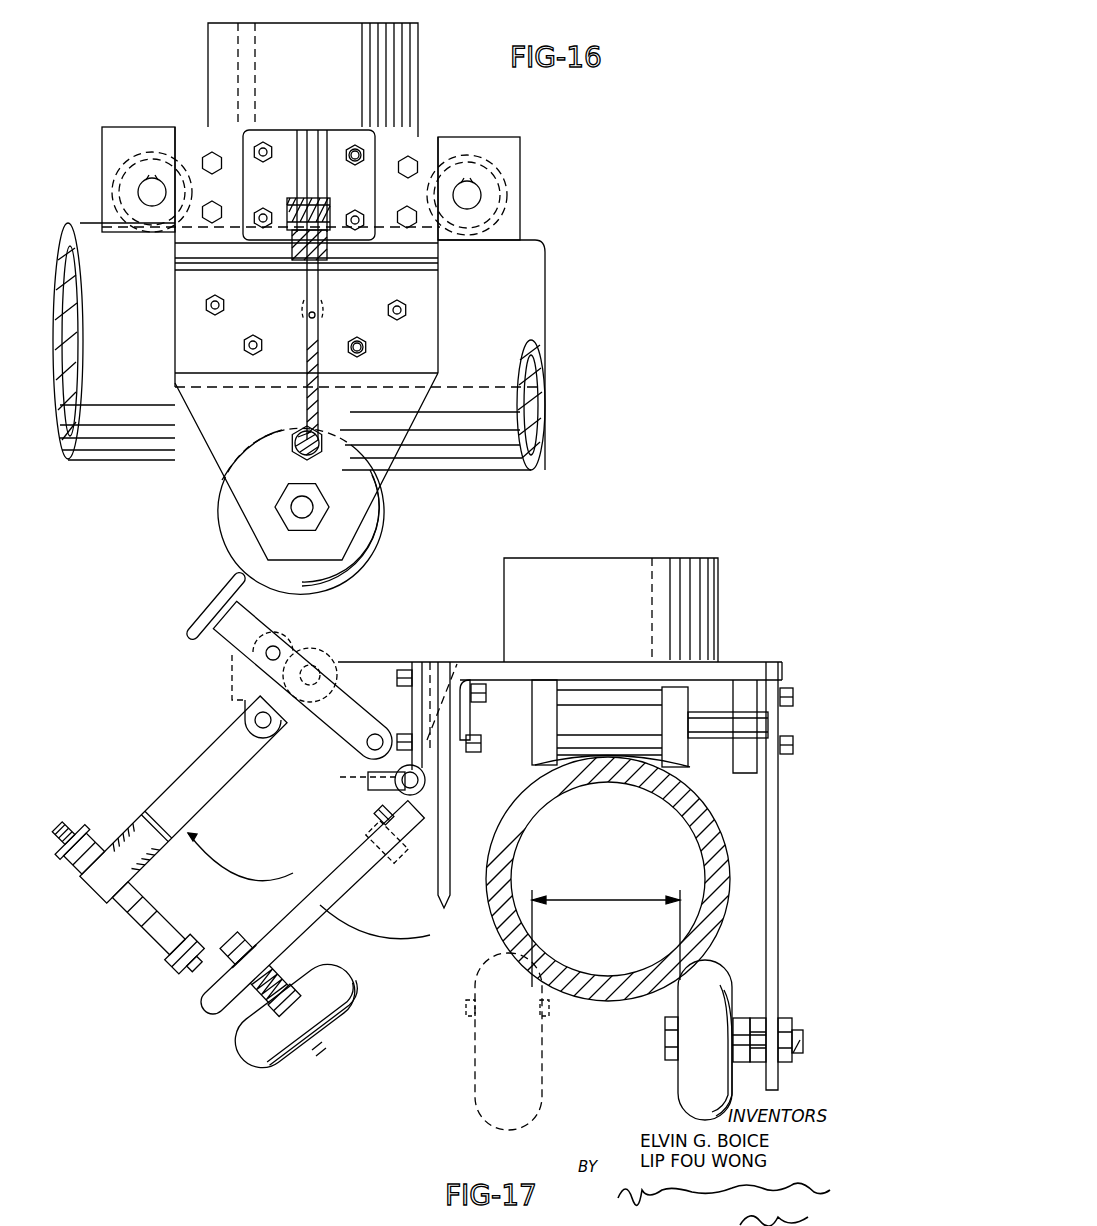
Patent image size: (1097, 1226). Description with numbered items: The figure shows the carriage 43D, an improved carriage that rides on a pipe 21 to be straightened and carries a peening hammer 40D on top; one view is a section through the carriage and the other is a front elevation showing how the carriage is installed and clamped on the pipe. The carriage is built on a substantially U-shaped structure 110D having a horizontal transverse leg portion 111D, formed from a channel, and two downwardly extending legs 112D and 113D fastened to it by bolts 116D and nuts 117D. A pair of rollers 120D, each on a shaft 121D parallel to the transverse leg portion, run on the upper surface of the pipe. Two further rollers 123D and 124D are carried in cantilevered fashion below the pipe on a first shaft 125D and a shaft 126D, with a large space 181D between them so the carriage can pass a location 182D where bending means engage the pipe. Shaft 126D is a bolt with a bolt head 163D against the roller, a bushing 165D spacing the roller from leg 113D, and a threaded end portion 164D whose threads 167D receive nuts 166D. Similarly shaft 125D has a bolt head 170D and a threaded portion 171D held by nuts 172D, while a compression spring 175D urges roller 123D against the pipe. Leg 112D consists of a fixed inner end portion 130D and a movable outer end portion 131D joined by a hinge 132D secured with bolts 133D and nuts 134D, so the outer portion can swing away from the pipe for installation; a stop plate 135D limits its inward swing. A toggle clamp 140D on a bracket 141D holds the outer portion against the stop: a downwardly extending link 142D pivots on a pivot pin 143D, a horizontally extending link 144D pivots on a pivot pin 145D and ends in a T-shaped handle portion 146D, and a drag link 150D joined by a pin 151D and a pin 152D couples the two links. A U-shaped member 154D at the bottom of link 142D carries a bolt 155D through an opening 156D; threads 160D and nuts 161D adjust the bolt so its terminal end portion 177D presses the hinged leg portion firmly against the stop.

In FIG. 16, the pipe 21 is at (533, 288).
In FIG. 17, the pipe 21 is at (736, 905).
In FIG. 17, the peening hammer 40D is at (688, 530).
In FIG. 16, the carriage 43D is at (600, 133).
In FIG. 17, the carriage 43D is at (786, 528).
In FIG. 17, the U-shaped structure 110D is at (784, 622).
In FIG. 17, the transverse leg portion 111D is at (745, 650).
In FIG. 16, the outwardly extending leg 112D is at (168, 302).
In FIG. 17, the outwardly extending leg 112D is at (482, 806).
In FIG. 17, the outwardly extending leg 113D is at (779, 810).
In FIG. 16, the bolts 116D is at (205, 205).
In FIG. 17, the bolts 116D is at (486, 694).
In FIG. 17, the nuts 117D is at (480, 688).
In FIG. 16, the rollers 120D is at (138, 155).
In FIG. 17, the rollers 120D is at (638, 748).
In FIG. 16, the shaft 121D is at (146, 192).
In FIG. 17, the shaft 121D is at (698, 768).
In FIG. 16, the roller 123D is at (364, 565).
In FIG. 17, the roller 123D is at (256, 1075).
In FIG. 17, the roller 124D is at (684, 1092).
In FIG. 17, the first shaft 125D is at (300, 1010).
In FIG. 17, the shaft 126D is at (799, 1040).
In FIG. 17, the inner end portion 130D is at (430, 660).
In FIG. 16, the outer end portion 131D is at (405, 470).
In FIG. 17, the outer end portion 131D is at (295, 925).
In FIG. 16, the hinge 132D is at (427, 262).
In FIG. 17, the hinge 132D is at (370, 786).
In FIG. 16, the bolts 133D is at (265, 142).
In FIG. 17, the bolts 133D is at (448, 672).
In FIG. 16, the nuts 134D is at (360, 150).
In FIG. 17, the nuts 134D is at (400, 740).
In FIG. 17, the plate 135D is at (446, 912).
In FIG. 17, the toggle clamp 140D is at (175, 675).
In FIG. 16, the bracket 141D is at (346, 125).
In FIG. 17, the bracket 141D is at (356, 660).
In FIG. 16, the link 142D is at (304, 312).
In FIG. 17, the link 142D is at (209, 753).
In FIG. 17, the pivot pin 143D is at (310, 665).
In FIG. 17, the link 144D is at (226, 605).
In FIG. 17, the pivot pin 145D is at (366, 742).
In FIG. 17, the handle portion 146D is at (202, 625).
In FIG. 16, the drag link 150D is at (382, 322).
In FIG. 17, the drag link 150D is at (236, 670).
In FIG. 16, the pin 151D is at (330, 212).
In FIG. 17, the pin 151D is at (274, 646).
In FIG. 17, the pin 152D is at (263, 735).
In FIG. 16, the U-shaped member 154D is at (318, 406).
In FIG. 17, the U-shaped member 154D is at (130, 830).
In FIG. 16, the bolt 155D is at (298, 440).
In FIG. 17, the bolt 155D is at (160, 946).
In FIG. 16, the opening 156D is at (225, 478).
In FIG. 17, the threads 160D is at (90, 840).
In FIG. 16, the nuts 161D is at (379, 525).
In FIG. 17, the nuts 161D is at (100, 868).
In FIG. 17, the bolt head 163D is at (668, 1050).
In FIG. 17, the threaded end portion 164D is at (786, 1020).
In FIG. 17, the bushing 165D is at (742, 1018).
In FIG. 17, the nuts 166D is at (758, 1018).
In FIG. 17, the threads 167D is at (792, 1052).
In FIG. 17, the bolt head 170D is at (318, 1055).
In FIG. 16, the threaded portion 171D is at (292, 510).
In FIG. 17, the threaded portion 171D is at (232, 944).
In FIG. 16, the nuts 172D is at (279, 500).
In FIG. 17, the nuts 172D is at (216, 976).
In FIG. 17, the compression spring 175D is at (250, 1006).
In FIG. 17, the terminal end portion 177D is at (150, 962).
In FIG. 17, the space 181D is at (625, 900).
In FIG. 17, the location 182D is at (584, 992).